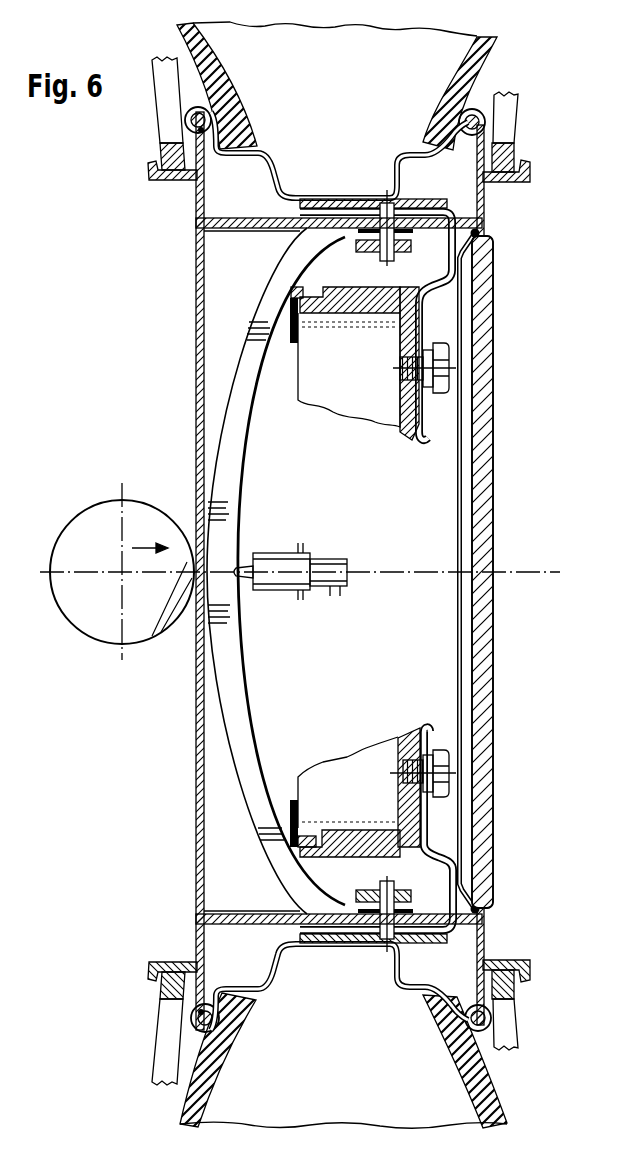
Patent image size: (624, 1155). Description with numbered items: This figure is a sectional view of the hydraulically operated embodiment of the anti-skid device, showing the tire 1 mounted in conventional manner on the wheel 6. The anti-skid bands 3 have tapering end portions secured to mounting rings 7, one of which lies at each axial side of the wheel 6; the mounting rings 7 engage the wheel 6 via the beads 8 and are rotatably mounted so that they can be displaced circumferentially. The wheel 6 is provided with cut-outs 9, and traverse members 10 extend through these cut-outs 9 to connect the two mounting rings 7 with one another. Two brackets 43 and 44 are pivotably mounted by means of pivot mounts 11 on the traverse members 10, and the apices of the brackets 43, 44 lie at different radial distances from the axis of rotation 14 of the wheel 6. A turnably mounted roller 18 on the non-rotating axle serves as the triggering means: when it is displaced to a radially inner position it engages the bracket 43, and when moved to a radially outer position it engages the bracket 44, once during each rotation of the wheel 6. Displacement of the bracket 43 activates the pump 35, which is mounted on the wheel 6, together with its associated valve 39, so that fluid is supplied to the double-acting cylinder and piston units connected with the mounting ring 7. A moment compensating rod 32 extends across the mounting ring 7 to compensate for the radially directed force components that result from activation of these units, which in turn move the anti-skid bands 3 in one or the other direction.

The tire 1 is at (500, 38).
The anti-skid bands 3 is at (500, 90).
The wheel 6 is at (287, 187).
The mounting ring 7 is at (150, 174).
The beads 8 is at (185, 117).
The cut-outs 9 is at (480, 236).
The traverse members 10 is at (196, 228).
The pivot mounts 11 is at (384, 200).
The axis of rotation 14 is at (420, 573).
The roller 18 is at (108, 628).
The moment compensating rod 32 is at (472, 530).
The pump 35 is at (272, 582).
The valve 39 is at (332, 578).
The bracket 43 is at (232, 730).
The bracket 44 is at (423, 890).